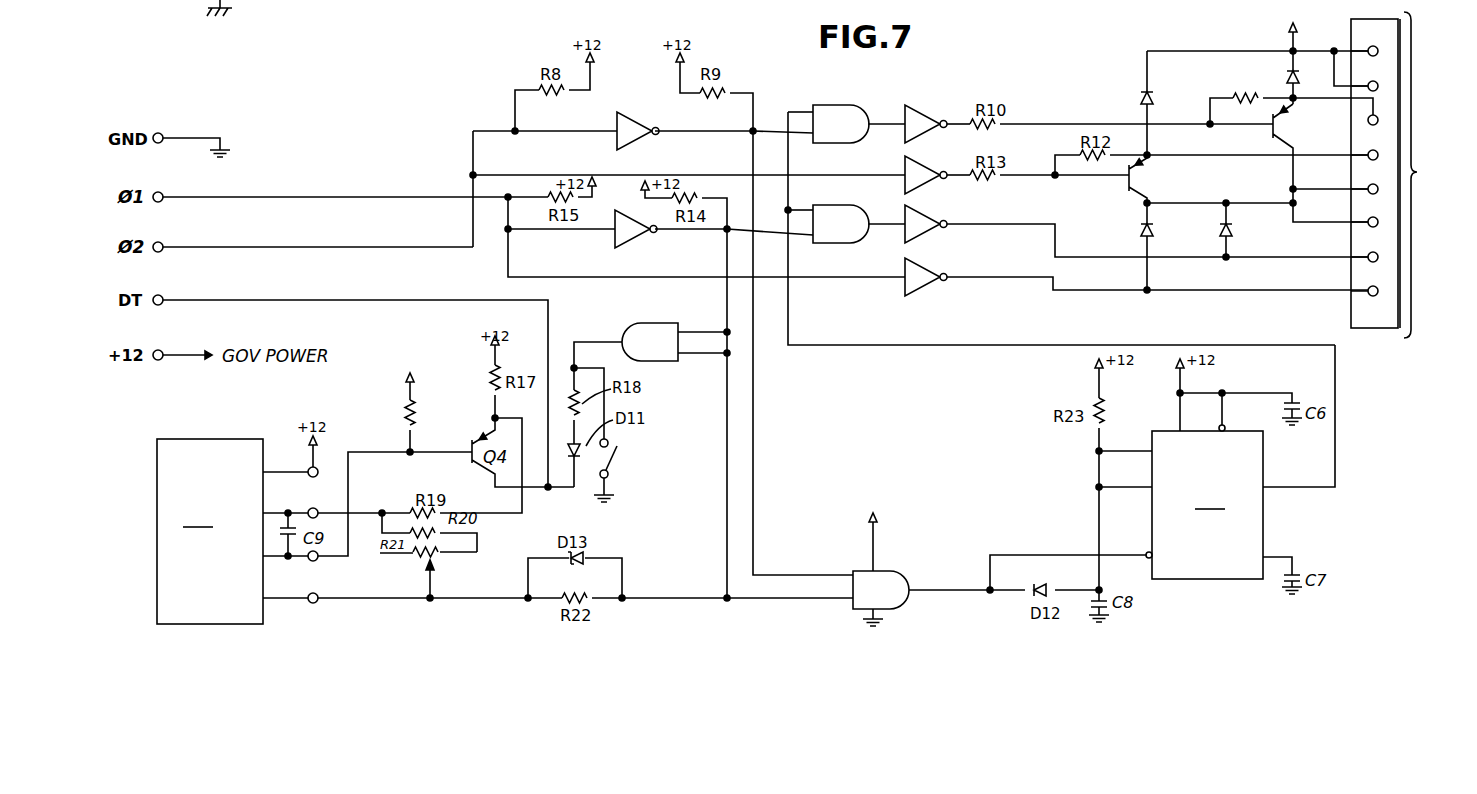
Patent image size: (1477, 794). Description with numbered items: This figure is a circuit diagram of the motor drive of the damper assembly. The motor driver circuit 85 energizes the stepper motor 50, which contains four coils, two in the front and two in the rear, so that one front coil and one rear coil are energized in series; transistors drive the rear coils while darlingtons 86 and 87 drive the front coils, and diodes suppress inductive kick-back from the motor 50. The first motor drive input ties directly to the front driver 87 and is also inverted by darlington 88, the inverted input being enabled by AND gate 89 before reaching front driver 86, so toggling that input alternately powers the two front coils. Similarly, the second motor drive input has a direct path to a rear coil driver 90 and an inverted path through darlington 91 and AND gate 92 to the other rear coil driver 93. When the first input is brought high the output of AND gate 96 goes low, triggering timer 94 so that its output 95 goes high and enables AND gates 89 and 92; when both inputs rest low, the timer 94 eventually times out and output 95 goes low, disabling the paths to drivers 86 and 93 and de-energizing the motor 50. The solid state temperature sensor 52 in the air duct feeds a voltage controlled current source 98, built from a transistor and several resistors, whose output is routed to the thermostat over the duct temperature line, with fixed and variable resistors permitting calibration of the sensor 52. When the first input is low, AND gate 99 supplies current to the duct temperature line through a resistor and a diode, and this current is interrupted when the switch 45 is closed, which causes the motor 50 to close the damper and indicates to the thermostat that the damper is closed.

The switch 45 is at (619, 446).
The stepper motor 50 is at (1414, 175).
The solid state temperature sensor 52 is at (157, 500).
The motor driver circuit 85 is at (1089, 104).
The darlington 86 is at (926, 234).
The darlington 87 is at (925, 289).
The darlington 88 is at (615, 242).
The AND gate 89 is at (847, 244).
The rear coil driver 90 is at (940, 160).
The darlington 91 is at (640, 106).
The AND gate 92 is at (853, 100).
The rear coil driver 93 is at (927, 116).
The timer 94 is at (1213, 580).
The timer output 95 is at (1307, 490).
The AND gate 96 is at (900, 571).
The voltage controlled current source 98 is at (385, 428).
The AND gate 99 is at (660, 317).